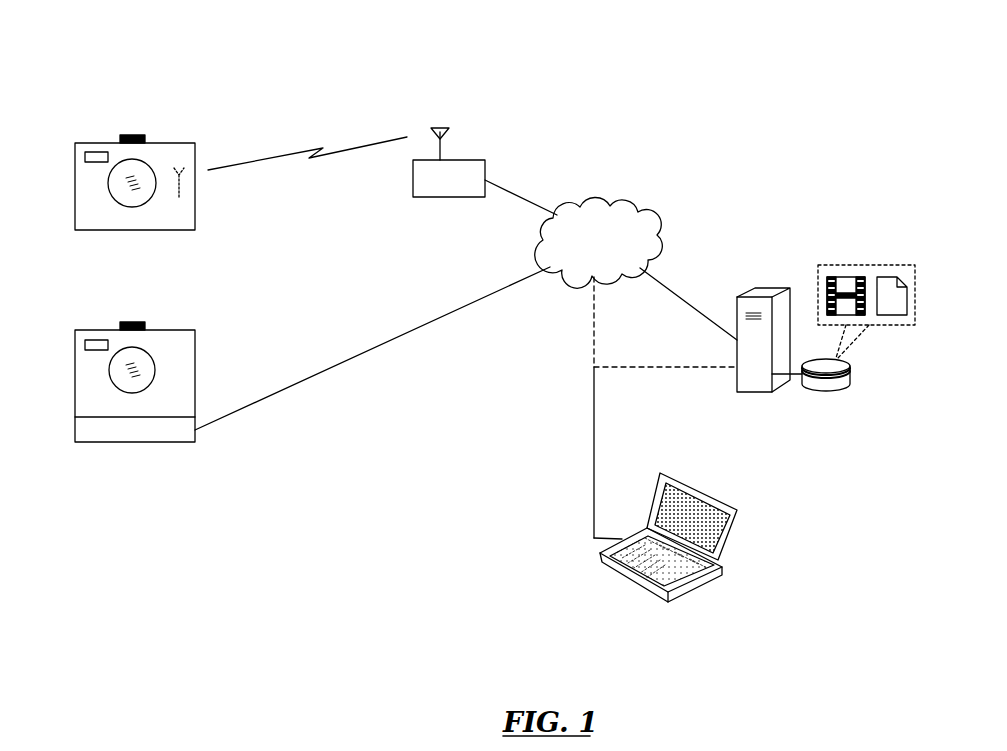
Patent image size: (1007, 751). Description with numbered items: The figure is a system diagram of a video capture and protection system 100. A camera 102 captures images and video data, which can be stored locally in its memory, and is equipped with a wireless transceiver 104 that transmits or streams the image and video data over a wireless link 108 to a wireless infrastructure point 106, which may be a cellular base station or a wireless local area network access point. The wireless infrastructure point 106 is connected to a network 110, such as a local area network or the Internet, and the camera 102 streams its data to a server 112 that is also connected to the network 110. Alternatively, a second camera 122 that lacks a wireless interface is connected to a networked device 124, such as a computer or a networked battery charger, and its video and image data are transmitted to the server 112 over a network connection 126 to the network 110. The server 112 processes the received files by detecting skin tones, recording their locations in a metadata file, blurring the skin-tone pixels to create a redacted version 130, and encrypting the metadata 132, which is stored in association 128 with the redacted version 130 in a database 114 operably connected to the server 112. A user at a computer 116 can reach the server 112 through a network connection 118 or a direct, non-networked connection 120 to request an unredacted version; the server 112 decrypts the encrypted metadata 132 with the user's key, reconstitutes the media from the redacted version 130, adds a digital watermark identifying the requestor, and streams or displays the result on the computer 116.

The video capture and protection system 100 is at (376, 36).
The camera 102 is at (75, 172).
The wireless transceiver 104 is at (179, 187).
The wireless infrastructure point 106 is at (445, 197).
The wireless link 108 is at (301, 150).
The network 110 is at (627, 206).
The server 112 is at (768, 291).
The database 114 is at (826, 390).
The computer 116 is at (625, 582).
The network connection 118 is at (594, 348).
The direct, non-networked connection 120 is at (690, 370).
The camera 122 is at (75, 378).
The networked device 124 is at (115, 444).
The network connection 126 is at (285, 391).
The association 128 is at (915, 305).
The redacted version 130 is at (845, 277).
The encrypted metadata 132 is at (890, 277).